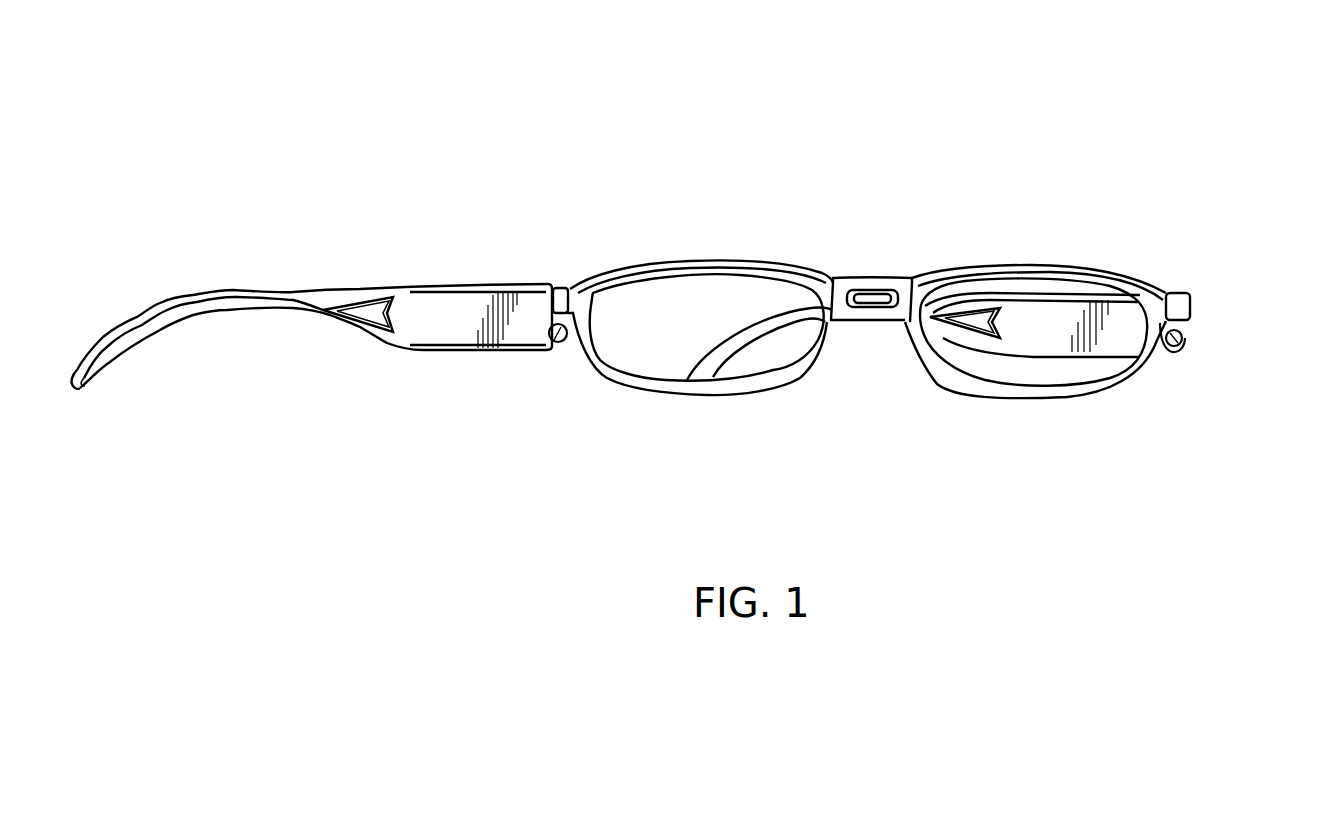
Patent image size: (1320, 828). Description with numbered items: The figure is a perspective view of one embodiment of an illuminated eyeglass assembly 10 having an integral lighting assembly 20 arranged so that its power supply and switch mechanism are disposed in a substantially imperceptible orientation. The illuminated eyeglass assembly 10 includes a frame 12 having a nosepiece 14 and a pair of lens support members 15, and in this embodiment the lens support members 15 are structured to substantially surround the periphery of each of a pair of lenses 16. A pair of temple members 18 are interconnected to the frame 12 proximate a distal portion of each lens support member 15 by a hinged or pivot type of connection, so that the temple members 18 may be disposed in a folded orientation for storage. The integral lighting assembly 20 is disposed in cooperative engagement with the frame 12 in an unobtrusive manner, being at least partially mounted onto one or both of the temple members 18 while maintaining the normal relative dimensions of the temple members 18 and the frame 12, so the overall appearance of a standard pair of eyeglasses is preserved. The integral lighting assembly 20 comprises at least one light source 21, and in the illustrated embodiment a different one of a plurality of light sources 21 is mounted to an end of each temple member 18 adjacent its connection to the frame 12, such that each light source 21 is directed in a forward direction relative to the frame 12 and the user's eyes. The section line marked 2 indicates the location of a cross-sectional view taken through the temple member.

The section line 2- 2 is at (800, 102).
The illuminated eyeglass assembly 10 is at (862, 184).
The frame 12 is at (1048, 263).
The nosepiece 14 is at (860, 312).
The lens support members 15 is at (662, 386).
The lenses 16 is at (676, 336).
The temple members 18 is at (313, 308).
The integral lighting assembly 20 is at (427, 360).
The light source 21 is at (556, 338).